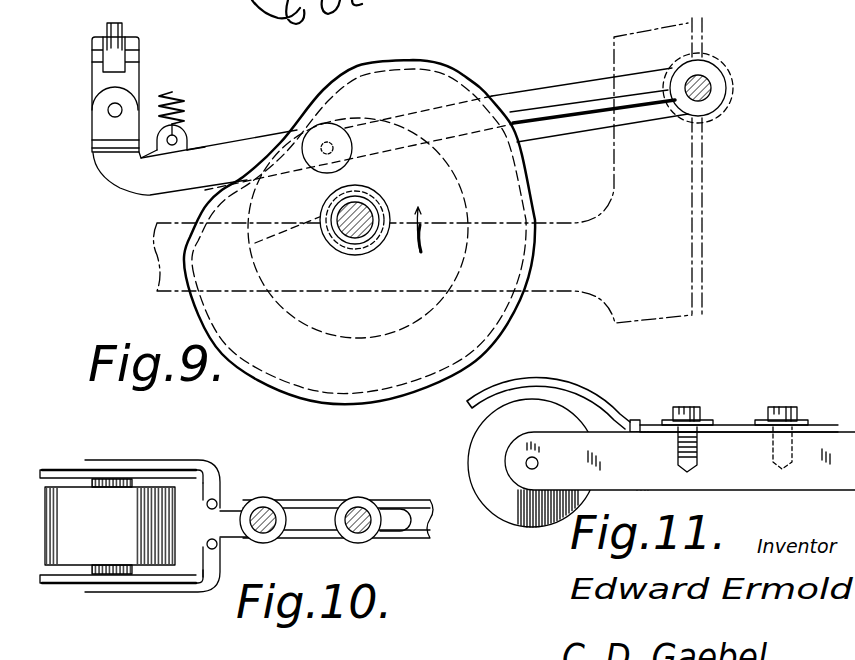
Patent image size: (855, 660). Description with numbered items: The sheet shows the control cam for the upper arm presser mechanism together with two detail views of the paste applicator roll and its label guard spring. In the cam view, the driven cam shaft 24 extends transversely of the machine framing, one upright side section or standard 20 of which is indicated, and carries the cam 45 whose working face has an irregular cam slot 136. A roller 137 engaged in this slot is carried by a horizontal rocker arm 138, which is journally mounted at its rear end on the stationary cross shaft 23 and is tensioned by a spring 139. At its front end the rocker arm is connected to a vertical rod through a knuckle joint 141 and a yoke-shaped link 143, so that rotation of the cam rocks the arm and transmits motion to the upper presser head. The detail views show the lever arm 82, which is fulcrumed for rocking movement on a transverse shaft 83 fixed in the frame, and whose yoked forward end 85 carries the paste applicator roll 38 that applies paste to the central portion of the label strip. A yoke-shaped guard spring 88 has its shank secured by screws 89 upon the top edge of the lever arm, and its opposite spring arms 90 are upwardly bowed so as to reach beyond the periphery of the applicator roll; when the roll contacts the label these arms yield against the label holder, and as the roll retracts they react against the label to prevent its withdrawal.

In FIG. 9, the upright side section or standard 20 is at (157, 225).
In FIG. 9, the stationary cross shaft 23 is at (717, 88).
In FIG. 9, the driven shaft 24 is at (348, 233).
In FIG. 9, the cam 45 is at (515, 258).
In FIG. 9, the cam slot 136 is at (492, 328).
In FIG. 9, the roller 137 is at (338, 120).
In FIG. 9, the horizontal rocker arm 138 is at (532, 97).
In FIG. 9, the spring 139 is at (187, 107).
In FIG. 9, the knuckle joint 141 is at (100, 115).
In FIG. 9, the yoke-shaped link 143 is at (115, 25).
In FIG. 10, the paste applicator roll 38 is at (40, 474).
In FIG. 11, the paste applicator roll 38 is at (485, 428).
In FIG. 10, the lever arm 82 is at (423, 487).
In FIG. 11, the transverse shaft 83 is at (823, 427).
In FIG. 10, the yoked forward end 85 is at (110, 585).
In FIG. 11, the yoked forward end 85 is at (543, 477).
In FIG. 10, the guard spring 88 is at (310, 532).
In FIG. 10, the screws 89 is at (348, 508).
In FIG. 11, the screws 89 is at (772, 417).
In FIG. 10, the spring arms 90 is at (147, 470).
In FIG. 11, the spring arms 90 is at (567, 372).